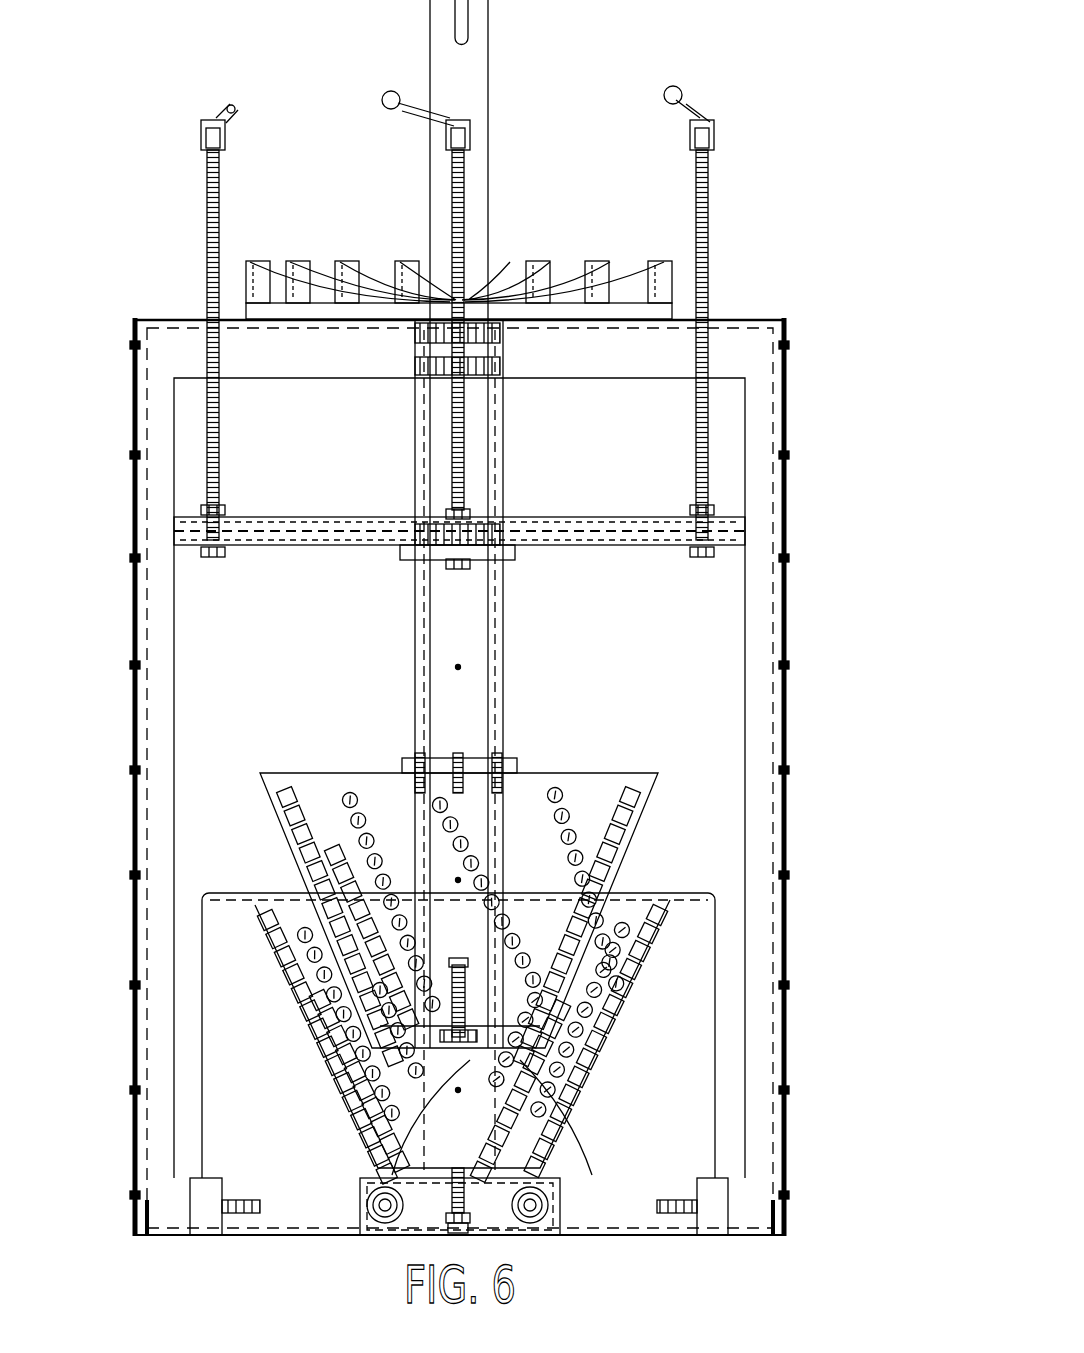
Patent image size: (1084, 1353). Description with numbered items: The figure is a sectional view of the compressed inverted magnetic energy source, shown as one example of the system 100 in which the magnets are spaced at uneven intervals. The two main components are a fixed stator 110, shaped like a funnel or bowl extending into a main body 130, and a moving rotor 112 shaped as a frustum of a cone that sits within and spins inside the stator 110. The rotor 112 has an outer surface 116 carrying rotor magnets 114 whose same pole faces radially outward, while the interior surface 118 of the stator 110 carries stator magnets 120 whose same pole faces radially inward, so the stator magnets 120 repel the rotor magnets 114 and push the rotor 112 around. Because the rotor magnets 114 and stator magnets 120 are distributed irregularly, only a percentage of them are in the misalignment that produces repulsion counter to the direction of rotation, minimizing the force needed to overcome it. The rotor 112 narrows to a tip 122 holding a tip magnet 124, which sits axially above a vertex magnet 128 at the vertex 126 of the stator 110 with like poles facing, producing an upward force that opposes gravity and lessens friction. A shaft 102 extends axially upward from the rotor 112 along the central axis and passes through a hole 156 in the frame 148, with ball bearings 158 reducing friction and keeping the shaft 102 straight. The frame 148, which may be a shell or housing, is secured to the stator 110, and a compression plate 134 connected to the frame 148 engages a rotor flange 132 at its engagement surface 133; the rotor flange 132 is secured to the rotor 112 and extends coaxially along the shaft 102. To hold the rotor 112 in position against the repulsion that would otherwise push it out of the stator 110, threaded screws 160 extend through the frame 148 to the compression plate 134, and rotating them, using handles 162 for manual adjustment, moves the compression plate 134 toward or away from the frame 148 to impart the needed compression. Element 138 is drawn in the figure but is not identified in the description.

The system 100 is at (822, 158).
The shaft 102 is at (475, 60).
The stator 110 is at (685, 970).
The rotor 112 is at (596, 786).
The rotor magnets 114 is at (627, 838).
The outer surface 116 is at (272, 822).
The interior surface 118 is at (280, 960).
The stator magnets 120 is at (655, 930).
The tip 122 is at (395, 1085).
The tip magnet 124 is at (470, 1060).
The vertex 126 is at (478, 1215).
The vertex magnet 128 is at (435, 1215).
The main body 130 is at (700, 1010).
The rotor flange 132 is at (497, 652).
The engagement surface 133 is at (480, 560).
The compression plate 134 is at (622, 522).
The fan 138 is at (608, 248).
The frame 148 is at (786, 522).
The hole 156 is at (478, 330).
The ball bearings 158 is at (500, 366).
The threaded screws 160 is at (207, 214).
The handles 162 is at (228, 112).